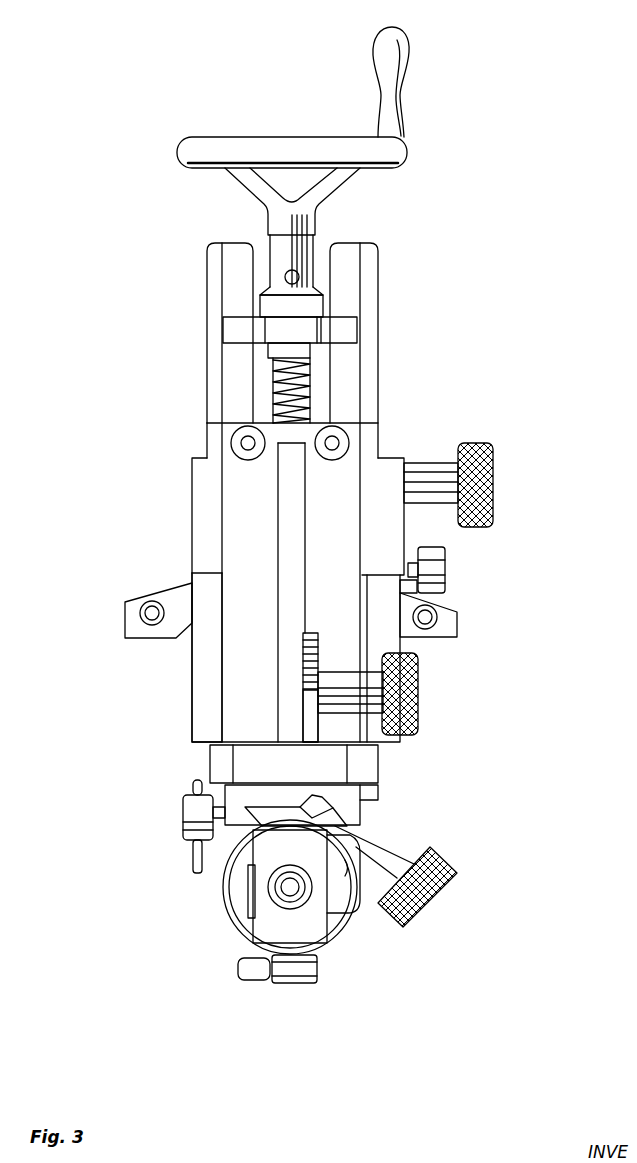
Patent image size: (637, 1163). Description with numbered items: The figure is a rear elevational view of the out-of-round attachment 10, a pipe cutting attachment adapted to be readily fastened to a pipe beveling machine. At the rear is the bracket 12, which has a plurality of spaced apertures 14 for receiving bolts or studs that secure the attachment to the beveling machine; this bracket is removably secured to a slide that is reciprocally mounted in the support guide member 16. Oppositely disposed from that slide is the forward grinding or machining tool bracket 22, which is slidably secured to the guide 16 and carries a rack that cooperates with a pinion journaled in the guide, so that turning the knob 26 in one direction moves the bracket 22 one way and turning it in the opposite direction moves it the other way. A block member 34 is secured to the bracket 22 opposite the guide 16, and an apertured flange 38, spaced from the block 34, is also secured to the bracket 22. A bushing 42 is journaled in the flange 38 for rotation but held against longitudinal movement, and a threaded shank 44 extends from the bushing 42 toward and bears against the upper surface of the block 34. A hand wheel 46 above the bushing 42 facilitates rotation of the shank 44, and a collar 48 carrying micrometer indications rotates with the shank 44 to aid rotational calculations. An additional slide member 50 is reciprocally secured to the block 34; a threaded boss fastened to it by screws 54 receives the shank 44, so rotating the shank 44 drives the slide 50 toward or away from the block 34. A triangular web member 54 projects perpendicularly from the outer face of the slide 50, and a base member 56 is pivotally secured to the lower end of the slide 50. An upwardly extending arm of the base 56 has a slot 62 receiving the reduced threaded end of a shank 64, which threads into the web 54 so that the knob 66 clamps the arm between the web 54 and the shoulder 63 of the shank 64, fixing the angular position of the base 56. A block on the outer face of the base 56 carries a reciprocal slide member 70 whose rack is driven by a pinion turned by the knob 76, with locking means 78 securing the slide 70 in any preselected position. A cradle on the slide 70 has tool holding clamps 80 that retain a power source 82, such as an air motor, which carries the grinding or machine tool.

The out-of-round attachment 10 is at (190, 488).
The rear bracket 12 is at (447, 620).
The spaced apertures 14 is at (150, 612).
The support guide member 16 is at (397, 535).
The grinding or machining tool bracket 22 is at (347, 282).
The knob 26 is at (458, 475).
The block member 34 is at (205, 702).
The apertured flange 38 is at (350, 330).
The bushing 42 is at (317, 347).
The threaded shank 44 is at (277, 393).
The hand wheel 46 is at (232, 148).
The collar 48 is at (270, 305).
The slide member 50 is at (353, 463).
The web member 54 is at (337, 442).
The base member 56 is at (347, 795).
The slot 62 is at (310, 633).
The shoulder 63 is at (303, 677).
The shank 64 is at (348, 683).
The knob 66 is at (418, 690).
The reciprocal slide member 70 is at (322, 813).
The knob 76 is at (450, 888).
The locking means 78 is at (190, 808).
The tool holding clamps 80 is at (340, 938).
The power source 82 is at (242, 897).